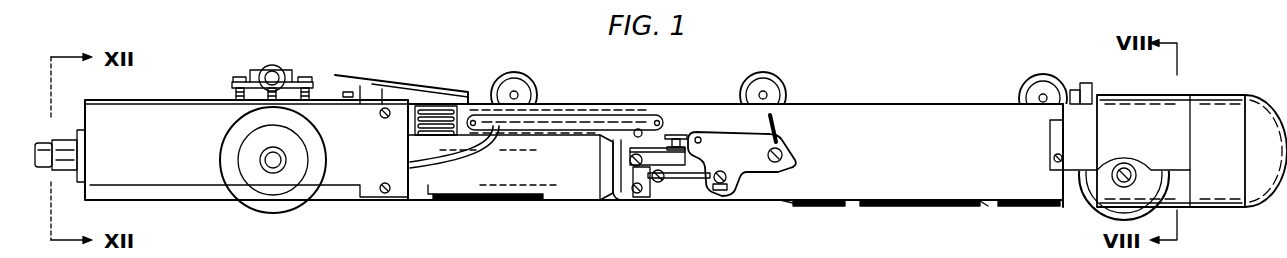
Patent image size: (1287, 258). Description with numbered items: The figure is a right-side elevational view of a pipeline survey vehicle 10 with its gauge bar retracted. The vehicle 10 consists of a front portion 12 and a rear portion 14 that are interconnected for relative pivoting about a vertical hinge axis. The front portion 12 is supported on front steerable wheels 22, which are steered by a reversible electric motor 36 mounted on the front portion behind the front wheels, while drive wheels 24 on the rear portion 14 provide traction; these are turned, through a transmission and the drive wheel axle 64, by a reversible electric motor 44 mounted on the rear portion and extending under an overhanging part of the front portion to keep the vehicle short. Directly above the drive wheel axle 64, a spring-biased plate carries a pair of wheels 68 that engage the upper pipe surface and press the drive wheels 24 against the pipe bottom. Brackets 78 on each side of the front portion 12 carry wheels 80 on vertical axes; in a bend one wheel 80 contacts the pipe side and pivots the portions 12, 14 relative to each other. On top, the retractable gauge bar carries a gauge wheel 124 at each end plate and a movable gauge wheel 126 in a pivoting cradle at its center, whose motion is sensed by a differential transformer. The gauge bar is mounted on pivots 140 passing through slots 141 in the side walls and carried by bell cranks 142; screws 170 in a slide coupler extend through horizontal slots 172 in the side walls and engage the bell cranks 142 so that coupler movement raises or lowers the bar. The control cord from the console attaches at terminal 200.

The vehicle 10 is at (916, 101).
The front portion 12 is at (1004, 167).
The rear portion 14 is at (184, 205).
The front steerable wheels 22 is at (1100, 208).
The drive wheels 24 is at (283, 207).
The electric motor 36 is at (933, 203).
The electric motor 44 is at (553, 177).
The drive wheel axle 64 is at (287, 160).
The wheels 68 is at (285, 80).
The brackets 78 is at (652, 158).
The wheels 80 is at (678, 132).
The gauge wheel 124 is at (541, 89).
The movable gauge wheel 126 is at (786, 88).
The pivots 140 is at (788, 160).
The slots 141 is at (778, 133).
The bell cranks 142 is at (746, 161).
The screws 170 is at (737, 185).
The horizontal slots 172 is at (697, 180).
The terminal 200 is at (67, 165).